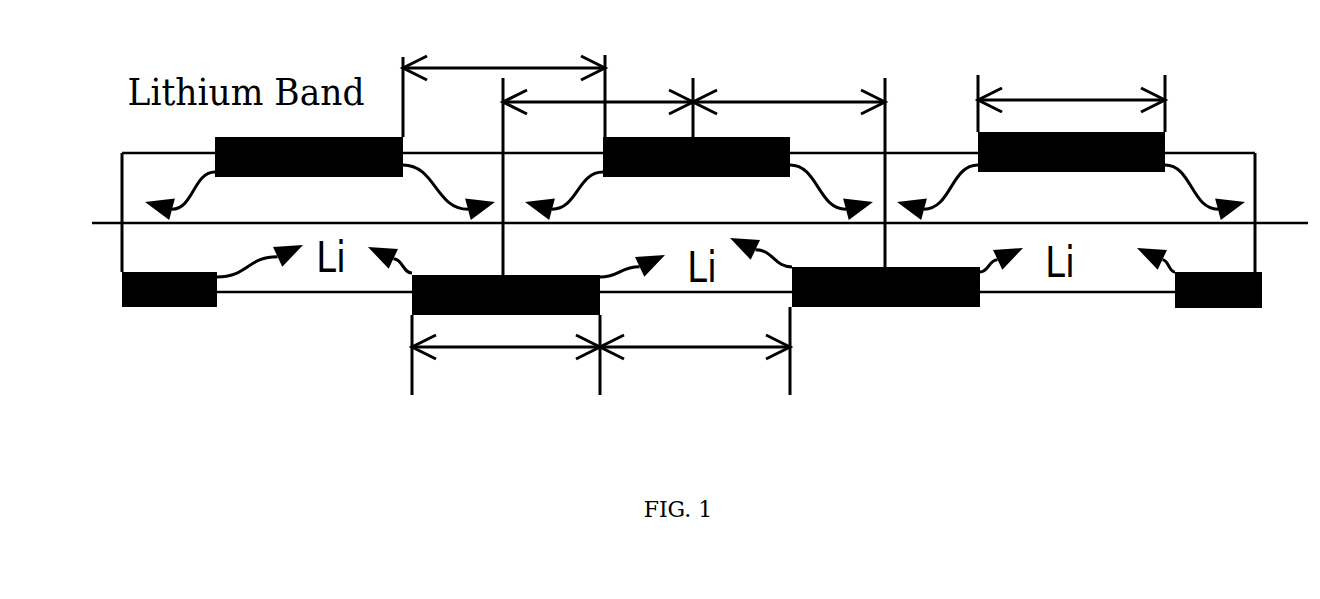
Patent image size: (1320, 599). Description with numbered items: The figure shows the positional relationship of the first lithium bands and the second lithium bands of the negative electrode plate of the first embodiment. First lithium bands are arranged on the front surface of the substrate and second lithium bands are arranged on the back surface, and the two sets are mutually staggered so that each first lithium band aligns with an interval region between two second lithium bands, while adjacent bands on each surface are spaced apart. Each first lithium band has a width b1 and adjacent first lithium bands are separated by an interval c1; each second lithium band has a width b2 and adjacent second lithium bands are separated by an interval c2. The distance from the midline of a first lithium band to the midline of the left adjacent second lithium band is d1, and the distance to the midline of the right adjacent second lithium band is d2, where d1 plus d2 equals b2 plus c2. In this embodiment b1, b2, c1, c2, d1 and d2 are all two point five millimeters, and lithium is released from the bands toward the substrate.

The width of each first lithium band b1 is at (1071, 102).
The width of each second lithium band b2 is at (506, 355).
The interval between two adjacent first lithium bands c1 is at (504, 79).
The interval between two adjacent second lithium bands c2 is at (695, 351).
The distance from the midline of a first lithium band to the midline of the left adj d1 is at (610, 171).
The distance from the midline of a first lithium band to the midline of the right ad d2 is at (789, 167).